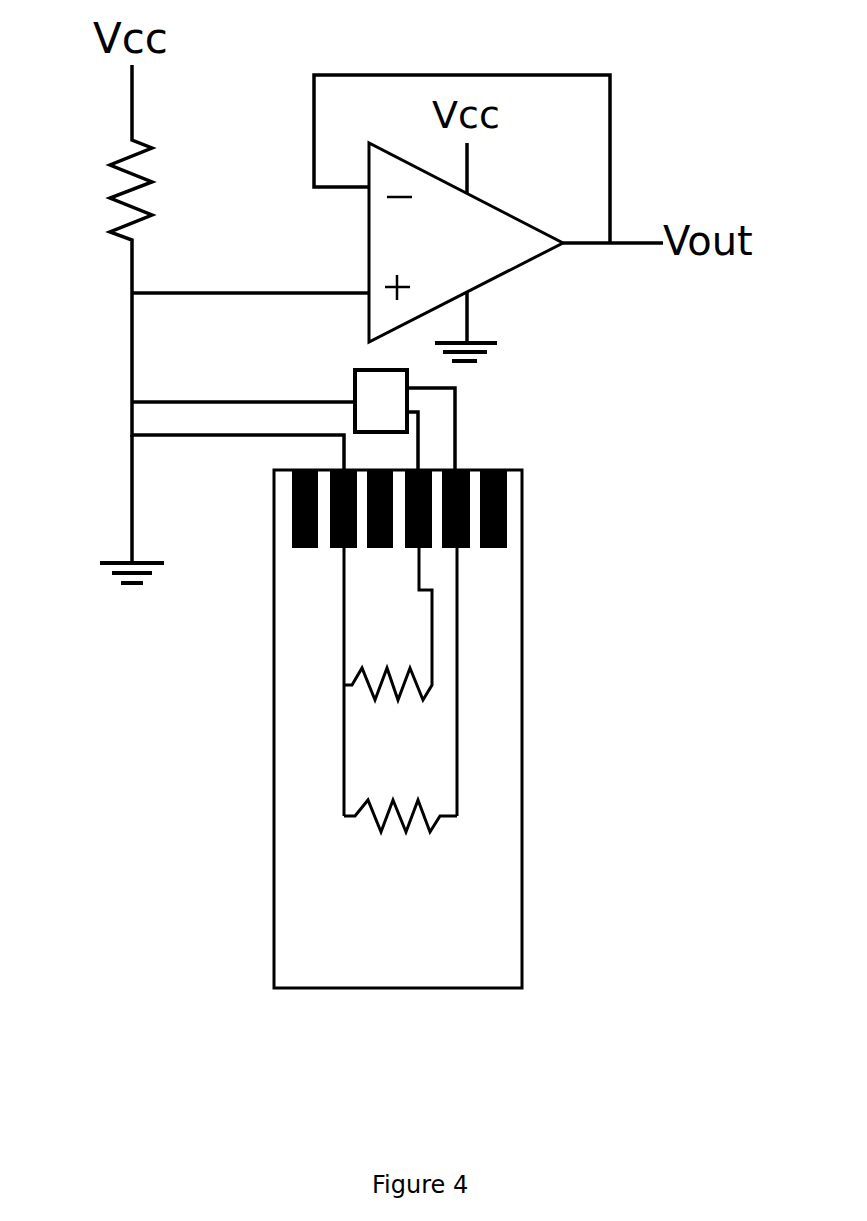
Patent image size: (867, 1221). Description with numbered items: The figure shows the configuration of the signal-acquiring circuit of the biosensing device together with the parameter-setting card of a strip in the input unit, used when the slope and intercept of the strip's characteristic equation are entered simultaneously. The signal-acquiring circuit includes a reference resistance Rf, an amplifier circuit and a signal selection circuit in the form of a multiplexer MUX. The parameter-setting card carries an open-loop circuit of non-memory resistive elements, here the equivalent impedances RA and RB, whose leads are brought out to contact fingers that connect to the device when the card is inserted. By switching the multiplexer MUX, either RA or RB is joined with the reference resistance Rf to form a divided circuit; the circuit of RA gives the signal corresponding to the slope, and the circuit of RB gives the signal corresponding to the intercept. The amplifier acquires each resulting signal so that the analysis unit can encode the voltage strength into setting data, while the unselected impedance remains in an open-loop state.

The reference resistance Rf is at (104, 251).
The multiplexer MUX is at (405, 411).
The equivalent impedance Rb RB is at (388, 624).
The equivalent impedance Ra RA is at (400, 793).